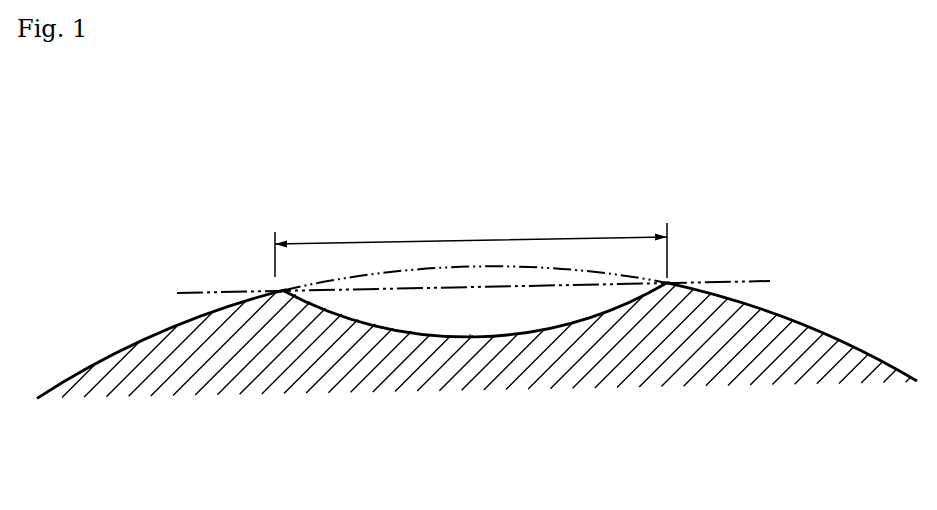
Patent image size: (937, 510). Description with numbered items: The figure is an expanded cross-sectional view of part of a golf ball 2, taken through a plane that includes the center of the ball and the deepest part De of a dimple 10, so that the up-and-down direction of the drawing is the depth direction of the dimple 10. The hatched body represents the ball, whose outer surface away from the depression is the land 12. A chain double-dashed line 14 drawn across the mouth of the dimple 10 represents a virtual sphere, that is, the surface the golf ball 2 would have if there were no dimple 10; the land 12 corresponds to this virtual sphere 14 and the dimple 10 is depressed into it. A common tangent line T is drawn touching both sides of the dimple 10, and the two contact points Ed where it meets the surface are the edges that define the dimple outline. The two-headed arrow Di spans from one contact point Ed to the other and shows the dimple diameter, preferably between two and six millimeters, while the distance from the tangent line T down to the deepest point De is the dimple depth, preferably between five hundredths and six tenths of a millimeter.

The golf ball 2 is at (866, 92).
The dimple 10 is at (384, 330).
The land 12 is at (805, 323).
The virtual sphere 14 is at (513, 267).
The common tangent line T is at (206, 292).
The contact point (edge) Ed is at (281, 291).
The diameter Di is at (471, 244).
The deepest part (deepest point) De is at (473, 337).